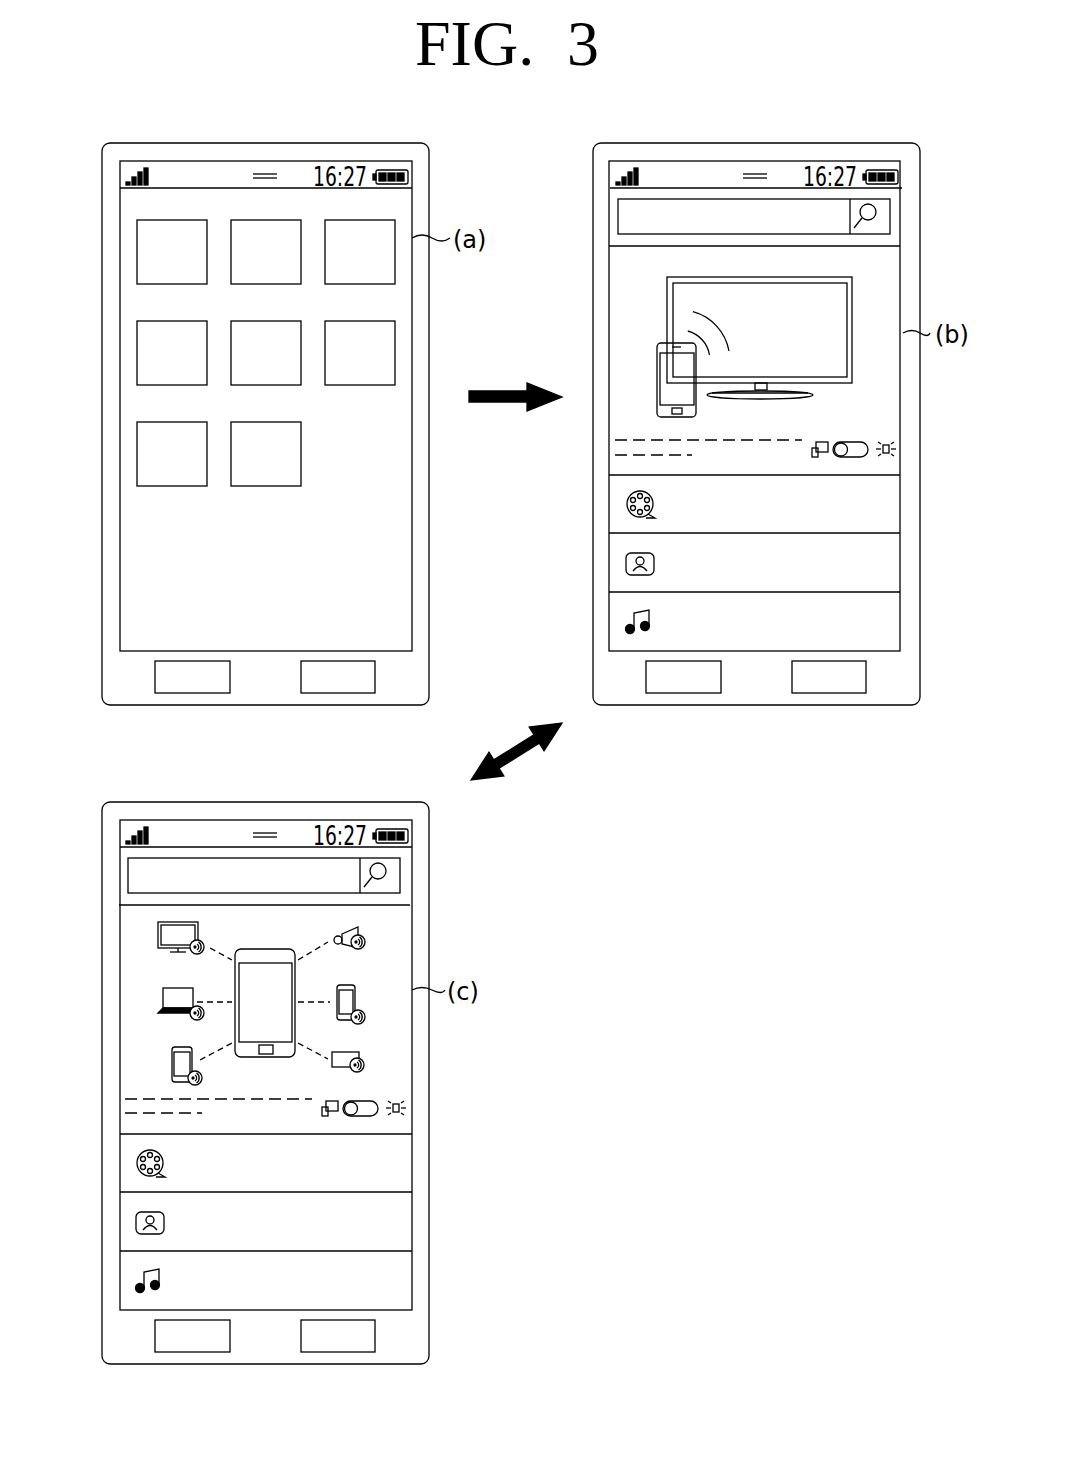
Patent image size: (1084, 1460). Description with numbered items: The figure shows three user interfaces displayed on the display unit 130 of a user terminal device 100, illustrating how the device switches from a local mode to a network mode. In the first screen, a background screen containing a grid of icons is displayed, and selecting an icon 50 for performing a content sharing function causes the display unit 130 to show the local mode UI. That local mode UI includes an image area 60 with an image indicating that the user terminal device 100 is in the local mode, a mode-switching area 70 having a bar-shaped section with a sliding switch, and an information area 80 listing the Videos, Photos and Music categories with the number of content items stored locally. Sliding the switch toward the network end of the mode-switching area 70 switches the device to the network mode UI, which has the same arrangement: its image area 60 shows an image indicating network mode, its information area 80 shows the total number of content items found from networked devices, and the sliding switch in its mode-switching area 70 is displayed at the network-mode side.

The user terminal device 100 is at (388, 143).
The display unit 130 is at (200, 187).
The icon 50 is at (395, 352).
The image area 60 is at (632, 291).
The mode-switching area 70 is at (887, 432).
The information area 80 is at (580, 475).